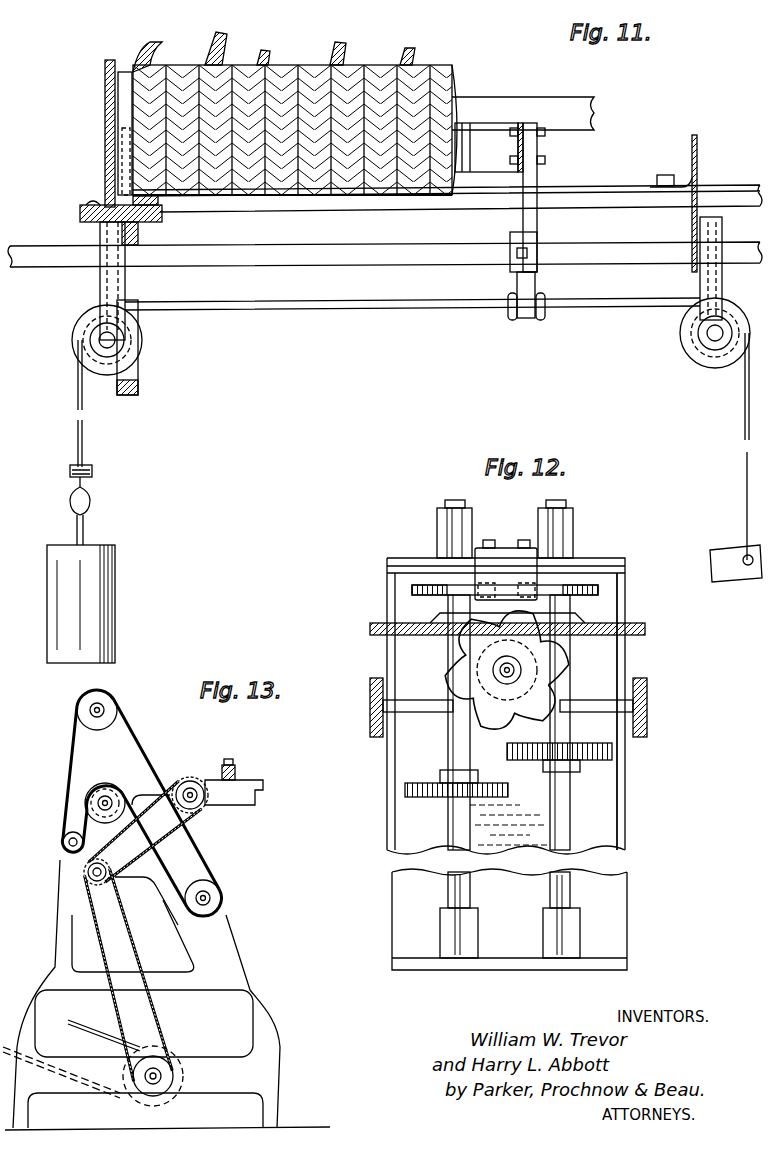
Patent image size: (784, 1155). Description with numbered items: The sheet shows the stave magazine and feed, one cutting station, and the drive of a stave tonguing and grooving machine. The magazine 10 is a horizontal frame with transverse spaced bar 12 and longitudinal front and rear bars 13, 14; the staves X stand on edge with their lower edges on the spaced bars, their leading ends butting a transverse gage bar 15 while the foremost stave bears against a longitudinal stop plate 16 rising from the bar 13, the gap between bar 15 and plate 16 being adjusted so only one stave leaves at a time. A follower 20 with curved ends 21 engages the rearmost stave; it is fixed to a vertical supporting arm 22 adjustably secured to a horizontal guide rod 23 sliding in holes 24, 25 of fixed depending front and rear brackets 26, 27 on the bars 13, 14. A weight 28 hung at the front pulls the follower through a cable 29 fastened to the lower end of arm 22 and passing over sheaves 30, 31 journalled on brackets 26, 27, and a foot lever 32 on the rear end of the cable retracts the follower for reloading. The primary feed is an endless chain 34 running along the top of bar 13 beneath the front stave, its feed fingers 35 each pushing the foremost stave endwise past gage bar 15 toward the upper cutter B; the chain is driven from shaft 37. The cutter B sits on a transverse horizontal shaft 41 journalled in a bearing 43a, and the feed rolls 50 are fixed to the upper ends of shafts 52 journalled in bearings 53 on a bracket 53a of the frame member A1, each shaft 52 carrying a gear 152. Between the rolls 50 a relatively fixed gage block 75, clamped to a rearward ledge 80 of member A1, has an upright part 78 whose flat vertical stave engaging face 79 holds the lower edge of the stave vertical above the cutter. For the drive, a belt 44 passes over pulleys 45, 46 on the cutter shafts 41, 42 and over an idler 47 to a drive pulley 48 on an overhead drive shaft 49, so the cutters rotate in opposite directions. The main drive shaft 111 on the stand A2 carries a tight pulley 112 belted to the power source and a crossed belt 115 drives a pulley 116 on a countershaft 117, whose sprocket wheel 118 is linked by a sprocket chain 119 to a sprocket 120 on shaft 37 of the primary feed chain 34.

In FIG. 11, the magazine 10 is at (385, 179).
In FIG. 11, the staves X is at (158, 58).
In FIG. 11, the transverse spaced bar 12 is at (598, 189).
In FIG. 11, the longitudinal front bar 13 is at (80, 215).
In FIG. 11, the longitudinal rear bar 14 is at (697, 160).
In FIG. 11, the transverse gage bar 15 is at (562, 104).
In FIG. 11, the longitudinal stop plate 16 is at (105, 110).
In FIG. 11, the follower 20 is at (524, 147).
In FIG. 11, the curved ends 21 is at (486, 147).
In FIG. 11, the vertical supporting arm 22 is at (537, 222).
In FIG. 11, the horizontal guide rod 23 is at (368, 255).
In FIG. 11, the hole 24 is at (100, 268).
In FIG. 11, the hole 25 is at (700, 236).
In FIG. 11, the front bracket 26 is at (125, 292).
In FIG. 11, the rear bracket 27 is at (700, 281).
In FIG. 11, the weight 28 is at (115, 560).
In FIG. 11, the cable 29 is at (322, 312).
In FIG. 11, the sheave 30 is at (100, 376).
In FIG. 11, the sheave 31 is at (688, 347).
In FIG. 11, the lever 32 is at (728, 548).
In FIG. 11, the endless chain 34 is at (162, 222).
In FIG. 11, the feed fingers 35 is at (127, 170).
In FIG. 12, the transverse horizontal shaft 41 is at (522, 670).
In FIG. 13, the transverse horizontal shaft 41 is at (110, 800).
In FIG. 12, the bearing 43a is at (592, 700).
In FIG. 12, the feed rolls 50 is at (412, 591).
In FIG. 12, the shafts 52 is at (550, 890).
In FIG. 12, the bearings 53 is at (437, 522).
In FIG. 12, the bracket 53a is at (628, 822).
In FIG. 12, the gage block 75 is at (575, 617).
In FIG. 12, the upright part 78 is at (508, 548).
In FIG. 12, the stave engaging face 79 is at (506, 578).
In FIG. 12, the ledge 80 is at (370, 629).
In FIG. 12, the gear 152 is at (545, 752).
In FIG. 12, the frame member A1 is at (526, 764).
In FIG. 12, the upper cutter B is at (468, 653).
In FIG. 13, the shaft 37 is at (205, 809).
In FIG. 13, the transverse horizontal shaft 42 is at (207, 896).
In FIG. 13, the belt 44 is at (146, 746).
In FIG. 13, the pulley 45 is at (101, 786).
In FIG. 13, the pulley 46 is at (222, 900).
In FIG. 13, the idler 47 is at (65, 853).
In FIG. 13, the drive pulley 48 is at (78, 716).
In FIG. 13, the overhead drive shaft 49 is at (102, 707).
In FIG. 13, the drive shaft 111 is at (165, 1076).
In FIG. 13, the tight pulley 112 is at (172, 1056).
In FIG. 13, the crossed belt 115 is at (125, 1012).
In FIG. 13, the pulley 116 is at (92, 888).
In FIG. 13, the countershaft 117 is at (85, 883).
In FIG. 13, the sprocket wheel 118 is at (145, 831).
In FIG. 13, the sprocket chain 119 is at (137, 884).
In FIG. 13, the sprocket 120 is at (198, 782).
In FIG. 13, the stand A2 is at (167, 962).